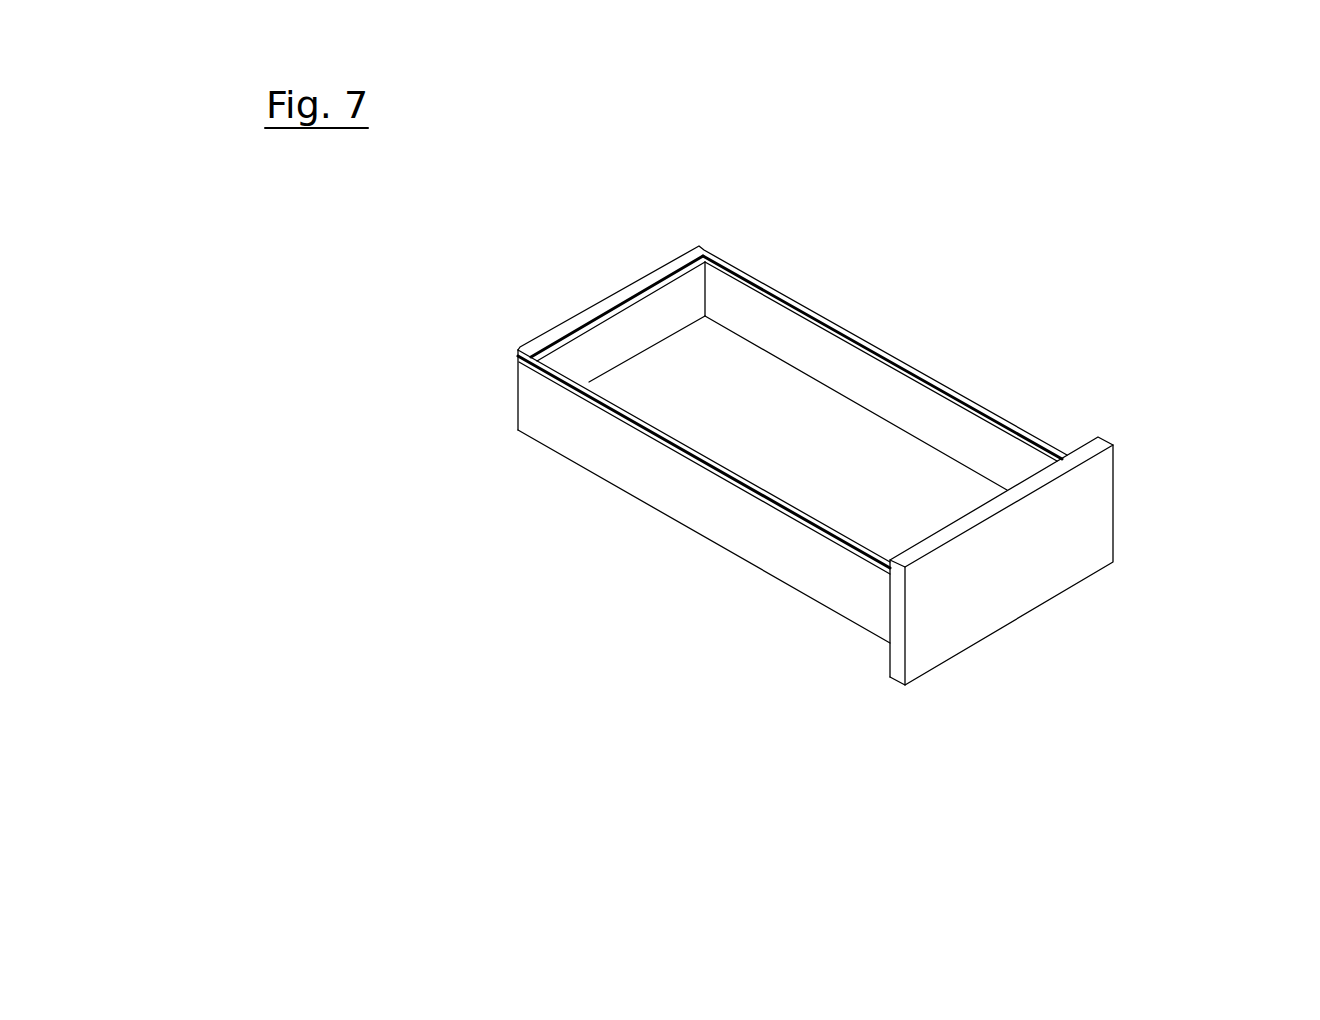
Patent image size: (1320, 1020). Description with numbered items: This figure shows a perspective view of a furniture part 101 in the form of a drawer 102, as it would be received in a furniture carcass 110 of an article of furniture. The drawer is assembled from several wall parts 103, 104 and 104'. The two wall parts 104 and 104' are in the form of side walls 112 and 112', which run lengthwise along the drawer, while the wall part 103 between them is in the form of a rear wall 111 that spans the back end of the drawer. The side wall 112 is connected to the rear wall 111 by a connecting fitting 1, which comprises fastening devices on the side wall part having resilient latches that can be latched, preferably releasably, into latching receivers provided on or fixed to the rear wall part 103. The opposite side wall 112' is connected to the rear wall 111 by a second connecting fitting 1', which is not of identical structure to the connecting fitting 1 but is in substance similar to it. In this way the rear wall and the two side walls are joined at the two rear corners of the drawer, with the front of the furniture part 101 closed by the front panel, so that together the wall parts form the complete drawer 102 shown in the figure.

The connecting fitting 1 is at (716, 211).
The connecting fitting 1' is at (483, 348).
The furniture part 101 is at (1040, 530).
The drawer 102 is at (1006, 371).
The wall part 103 is at (657, 303).
The wall part 104 is at (856, 383).
The wall part 104' is at (704, 536).
The furniture carcass 110 is at (762, 318).
The rear wall 111 is at (598, 337).
The side wall 112 is at (882, 353).
The side wall 112' is at (700, 469).